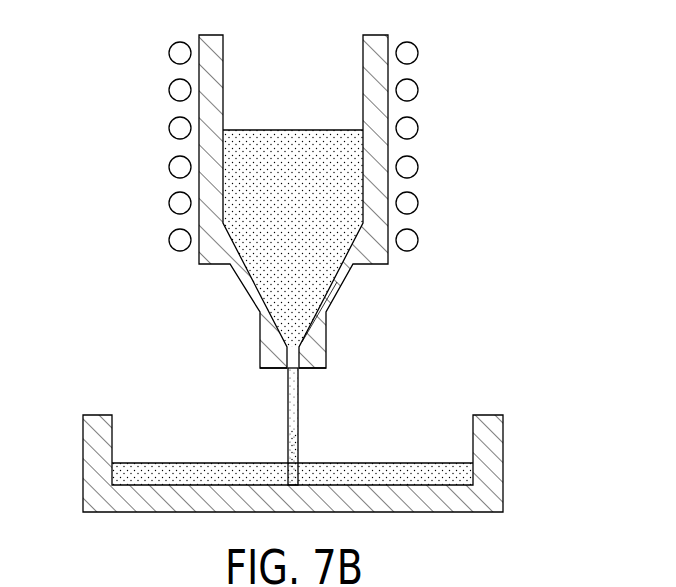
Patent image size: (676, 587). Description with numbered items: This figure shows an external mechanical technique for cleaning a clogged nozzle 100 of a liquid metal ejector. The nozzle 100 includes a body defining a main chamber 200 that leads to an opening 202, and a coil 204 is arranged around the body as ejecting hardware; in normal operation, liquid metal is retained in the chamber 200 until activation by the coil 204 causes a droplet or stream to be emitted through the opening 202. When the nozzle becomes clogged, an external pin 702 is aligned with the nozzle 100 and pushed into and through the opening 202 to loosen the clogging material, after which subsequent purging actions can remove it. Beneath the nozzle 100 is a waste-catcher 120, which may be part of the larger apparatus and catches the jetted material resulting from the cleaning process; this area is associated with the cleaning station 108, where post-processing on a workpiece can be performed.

The nozzle 100 is at (319, 242).
The main chamber 200 is at (212, 34).
The opening 202 is at (272, 360).
The coil 204 is at (420, 167).
The pin 702 is at (296, 401).
The cleaning station 108 is at (309, 463).
The waste-catcher 120 is at (92, 453).